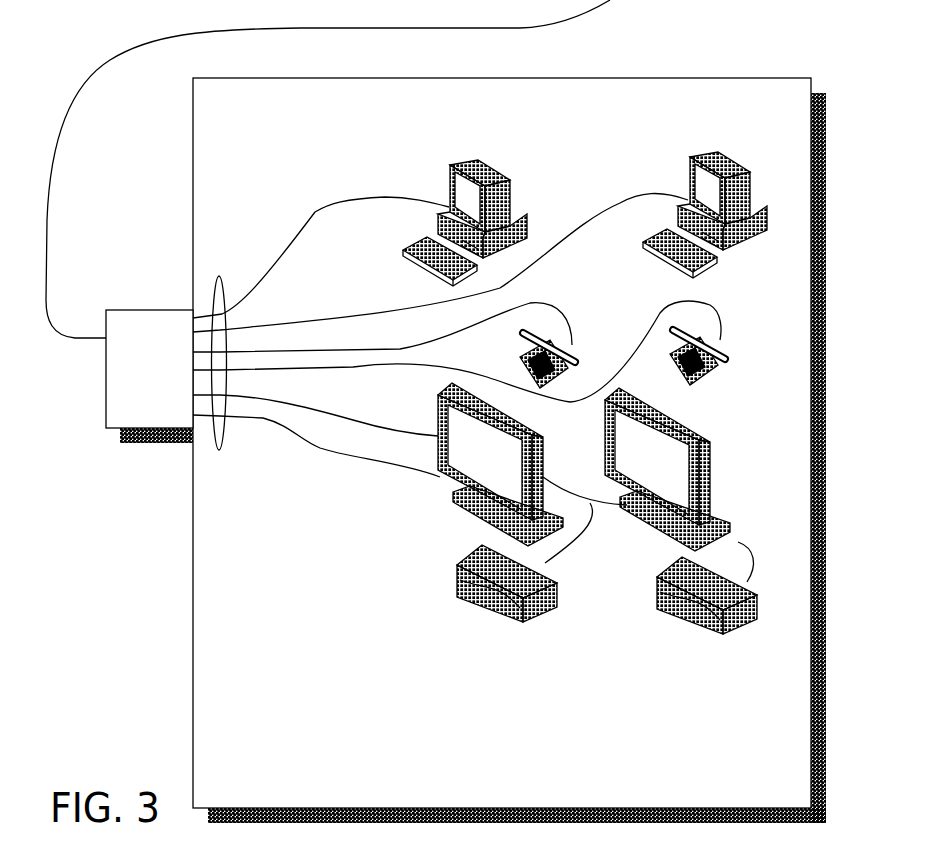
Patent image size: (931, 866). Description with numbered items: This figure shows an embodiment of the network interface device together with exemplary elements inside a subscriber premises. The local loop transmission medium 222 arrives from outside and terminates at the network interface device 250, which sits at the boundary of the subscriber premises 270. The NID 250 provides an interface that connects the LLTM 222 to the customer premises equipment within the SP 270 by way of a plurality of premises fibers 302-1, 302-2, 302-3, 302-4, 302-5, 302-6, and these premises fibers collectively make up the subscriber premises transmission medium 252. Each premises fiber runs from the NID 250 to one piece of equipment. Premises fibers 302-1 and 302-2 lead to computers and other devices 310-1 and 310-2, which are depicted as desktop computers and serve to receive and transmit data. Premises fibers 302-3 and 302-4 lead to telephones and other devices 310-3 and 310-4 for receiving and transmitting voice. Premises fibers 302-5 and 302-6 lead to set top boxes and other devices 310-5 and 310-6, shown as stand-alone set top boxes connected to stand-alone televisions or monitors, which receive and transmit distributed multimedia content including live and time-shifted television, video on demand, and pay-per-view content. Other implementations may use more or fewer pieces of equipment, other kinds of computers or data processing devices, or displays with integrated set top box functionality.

The local loop transmission medium 222 is at (52, 172).
The network interface device 250 is at (138, 387).
The subscriber premises transmission medium 252 is at (219, 272).
The subscriber premises 270 is at (616, 804).
The premises fiber 302-1 is at (305, 221).
The premises fiber 302-2 is at (605, 212).
The premises fiber 302-3 is at (420, 348).
The premises fiber 302-4 is at (667, 308).
The premises fiber 302-5 is at (400, 430).
The premises fiber 302-6 is at (370, 458).
The customer premises equipment 310-1 is at (448, 178).
The customer premises equipment 310-2 is at (757, 236).
The customer premises equipment 310-3 is at (572, 380).
The customer premises equipment 310-4 is at (705, 372).
The customer premises equipment 310-5 is at (543, 609).
The customer premises equipment 310-6 is at (740, 628).